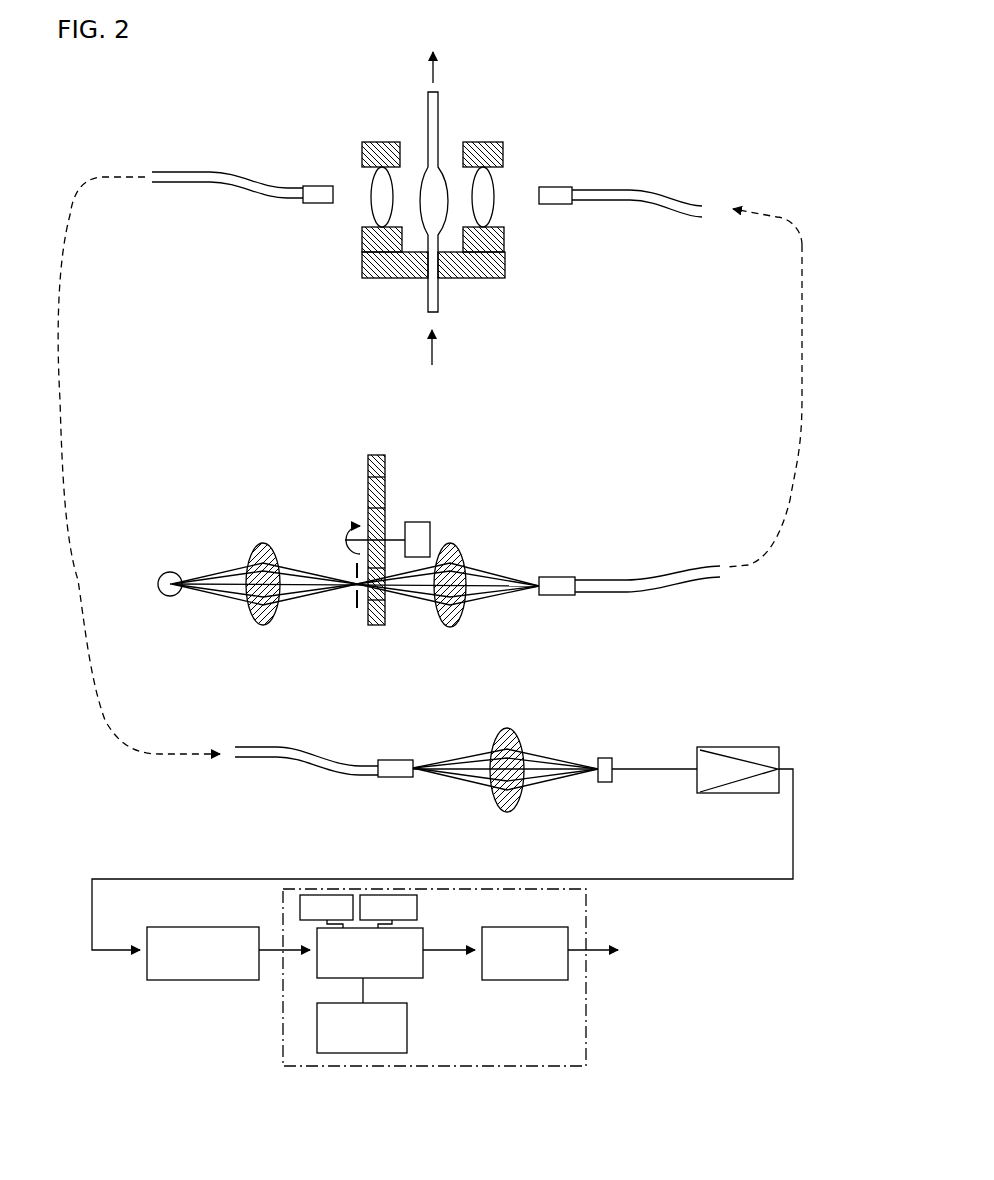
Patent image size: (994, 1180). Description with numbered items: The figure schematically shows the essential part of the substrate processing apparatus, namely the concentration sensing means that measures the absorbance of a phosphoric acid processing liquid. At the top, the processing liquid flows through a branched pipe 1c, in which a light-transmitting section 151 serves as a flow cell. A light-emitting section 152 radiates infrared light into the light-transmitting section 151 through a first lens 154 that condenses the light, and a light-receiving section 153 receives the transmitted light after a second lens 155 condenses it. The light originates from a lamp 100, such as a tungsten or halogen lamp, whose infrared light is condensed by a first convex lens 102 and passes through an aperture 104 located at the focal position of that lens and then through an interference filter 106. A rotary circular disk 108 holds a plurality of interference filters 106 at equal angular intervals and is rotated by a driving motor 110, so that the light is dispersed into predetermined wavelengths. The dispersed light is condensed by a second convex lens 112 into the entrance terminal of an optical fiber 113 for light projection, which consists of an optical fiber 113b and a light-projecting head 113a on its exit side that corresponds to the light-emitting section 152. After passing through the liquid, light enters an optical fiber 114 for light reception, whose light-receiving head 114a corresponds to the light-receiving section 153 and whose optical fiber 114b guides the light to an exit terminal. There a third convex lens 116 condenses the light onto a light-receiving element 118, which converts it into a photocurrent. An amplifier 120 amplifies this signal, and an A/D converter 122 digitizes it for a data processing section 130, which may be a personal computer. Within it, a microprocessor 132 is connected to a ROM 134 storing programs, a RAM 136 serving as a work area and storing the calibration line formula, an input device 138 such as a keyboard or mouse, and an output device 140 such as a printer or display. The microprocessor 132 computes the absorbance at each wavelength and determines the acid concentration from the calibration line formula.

The branched pipe 1c is at (440, 108).
The light-transmitting section 151 is at (418, 152).
The light-emitting section 152 is at (547, 187).
The light-receiving section 153 is at (308, 185).
The first lens 154 is at (497, 204).
The second lens 155 is at (372, 210).
The lamp 100 is at (172, 572).
The first convex lens 102 is at (260, 544).
The aperture 104 is at (357, 600).
The interference filter 106 is at (368, 493).
The rotary circular disk 108 is at (377, 625).
The driving motor 110 is at (417, 522).
The second convex lens 112 is at (458, 612).
The optical fiber for light projection 113 is at (622, 172).
The light-projecting head 113a is at (553, 205).
The optical fiber 113b is at (650, 207).
The optical fiber for light reception 114 is at (280, 153).
The light-receiving head 114a is at (322, 205).
The optical fiber 114b is at (242, 193).
The third convex lens 116 is at (517, 740).
The light-receiving element 118 is at (608, 758).
The amplifier 120 is at (738, 793).
The A/D converter 122 is at (190, 980).
The data processing section 130 is at (586, 993).
The microprocessor 132 is at (405, 978).
The ROM 134 is at (300, 907).
The RAM 136 is at (417, 908).
The input device 138 is at (407, 1035).
The output device 140 is at (528, 980).